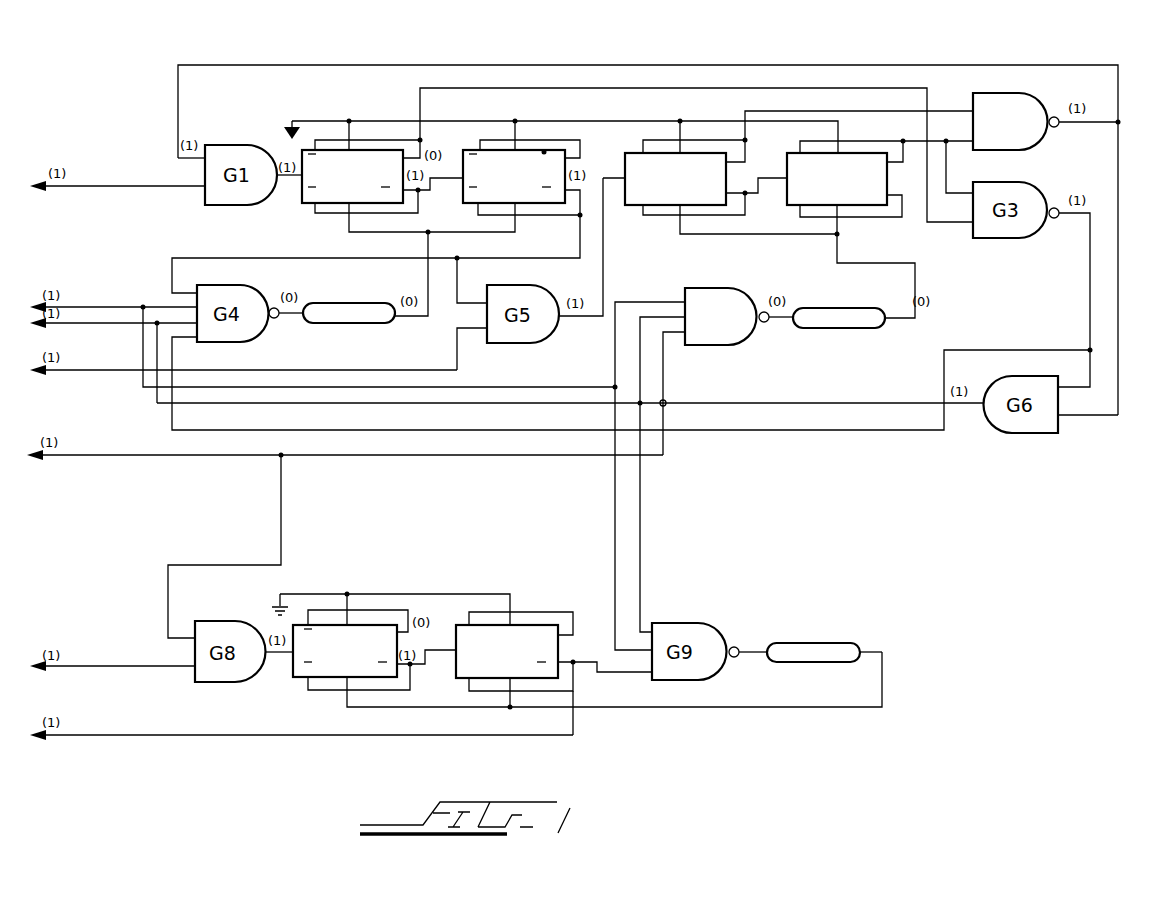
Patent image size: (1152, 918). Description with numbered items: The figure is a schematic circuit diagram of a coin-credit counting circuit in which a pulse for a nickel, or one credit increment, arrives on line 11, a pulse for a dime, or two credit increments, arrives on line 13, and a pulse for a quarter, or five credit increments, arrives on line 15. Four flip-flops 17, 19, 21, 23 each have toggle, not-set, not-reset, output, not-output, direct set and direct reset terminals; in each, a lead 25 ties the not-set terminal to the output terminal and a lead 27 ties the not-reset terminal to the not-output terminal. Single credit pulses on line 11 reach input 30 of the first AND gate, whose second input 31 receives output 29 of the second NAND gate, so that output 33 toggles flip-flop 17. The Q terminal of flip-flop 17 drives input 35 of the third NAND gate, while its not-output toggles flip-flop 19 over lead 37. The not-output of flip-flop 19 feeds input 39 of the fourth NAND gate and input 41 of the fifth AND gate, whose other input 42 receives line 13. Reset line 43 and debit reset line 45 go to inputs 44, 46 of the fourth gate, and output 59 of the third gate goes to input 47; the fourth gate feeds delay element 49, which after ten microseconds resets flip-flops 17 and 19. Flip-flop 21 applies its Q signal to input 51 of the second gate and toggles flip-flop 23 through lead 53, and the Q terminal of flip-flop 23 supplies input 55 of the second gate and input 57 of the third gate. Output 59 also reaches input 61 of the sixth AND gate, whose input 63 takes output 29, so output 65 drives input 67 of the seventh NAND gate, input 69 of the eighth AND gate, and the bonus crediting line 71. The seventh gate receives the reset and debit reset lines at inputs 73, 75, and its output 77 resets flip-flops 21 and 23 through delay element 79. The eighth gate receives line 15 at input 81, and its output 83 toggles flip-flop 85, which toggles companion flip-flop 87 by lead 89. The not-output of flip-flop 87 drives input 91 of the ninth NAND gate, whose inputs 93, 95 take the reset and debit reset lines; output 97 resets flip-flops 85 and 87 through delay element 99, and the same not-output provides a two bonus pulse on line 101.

The line 11 is at (85, 186).
The line 13 is at (80, 370).
The line 15 is at (80, 666).
The flip-flop 17 is at (385, 146).
The flip-flop 19 is at (546, 150).
The flip-flop 21 is at (633, 150).
The flip-flop 23 is at (858, 153).
The lead 25 is at (332, 140).
The lead 27 is at (320, 213).
The output of NAND gate G2 29 is at (1060, 128).
The input of AND gate G1 30 is at (205, 186).
The second input of AND gate G1 31 is at (205, 158).
The output of AND gate G1 33 is at (282, 178).
The input of NAND gate G3 35 is at (972, 222).
The lead 37 is at (440, 190).
The input of NAND gate G4 39 is at (190, 293).
The input of AND gate G5 41 is at (487, 300).
The input of gate G5 42 is at (487, 330).
The reset line 43 is at (58, 307).
The input of NAND gate G4 44 is at (197, 305).
The debit reset line 45 is at (68, 323).
The input of NAND gate G4 46 is at (197, 329).
The input of NAND gate G4 47 is at (192, 340).
The delay element 49 is at (368, 323).
The input of NAND gate G2 51 is at (976, 96).
The lead 53 is at (772, 183).
The input of NAND gate G2 55 is at (968, 111).
The input of NAND gate G3 57 is at (973, 193).
The output of NAND gate G3 59 is at (1064, 216).
The input of AND gate G6 61 is at (1060, 390).
The input of AND gate G6 63 is at (1060, 420).
The output of AND gate G6 65 is at (983, 405).
The input of NAND gate G7 67 is at (688, 333).
The input of AND gate G8 69 is at (190, 638).
The line 71 is at (100, 455).
The input of gate G7 73 is at (692, 290).
The input of gate G7 75 is at (685, 302).
The output of NAND gate G7 77 is at (768, 322).
The delay element 79 is at (866, 328).
The input of AND gate G8 81 is at (195, 668).
The output of AND gate G8 83 is at (268, 655).
The flip-flop 85 is at (380, 684).
The companion flip-flop 87 is at (495, 686).
The lead 89 is at (437, 648).
The input terminal of NAND gate G9 91 is at (655, 672).
The input terminal of NAND gate G9 93 is at (657, 652).
The input terminal of NAND gate G9 95 is at (655, 628).
The output of NAND gate G9 97 is at (740, 650).
The delay element 99 is at (803, 663).
The line 101 is at (78, 735).